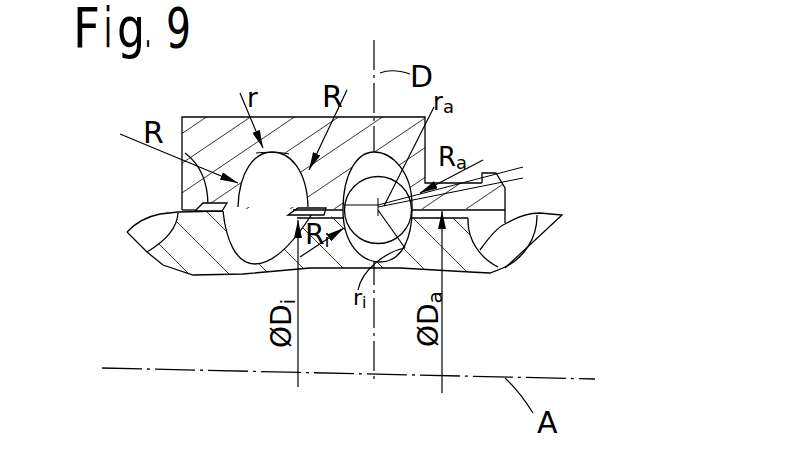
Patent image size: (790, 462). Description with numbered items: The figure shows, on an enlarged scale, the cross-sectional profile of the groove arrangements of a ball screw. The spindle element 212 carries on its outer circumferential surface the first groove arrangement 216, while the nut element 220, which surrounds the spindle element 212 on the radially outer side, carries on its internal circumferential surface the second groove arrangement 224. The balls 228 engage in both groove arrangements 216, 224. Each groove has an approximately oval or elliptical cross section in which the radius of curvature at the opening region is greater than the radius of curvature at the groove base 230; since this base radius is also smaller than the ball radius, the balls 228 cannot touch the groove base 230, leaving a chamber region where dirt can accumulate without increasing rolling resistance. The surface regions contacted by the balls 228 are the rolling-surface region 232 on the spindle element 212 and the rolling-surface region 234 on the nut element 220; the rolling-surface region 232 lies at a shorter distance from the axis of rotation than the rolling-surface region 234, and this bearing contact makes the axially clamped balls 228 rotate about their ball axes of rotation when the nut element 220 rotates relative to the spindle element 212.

The spindle element 212 is at (170, 265).
The first groove arrangement 216 is at (232, 273).
The nut element 220 is at (182, 130).
The second groove arrangement 224 is at (250, 148).
The balls 228 is at (503, 268).
The groove base 230 is at (280, 151).
The rolling-surface region 232 is at (330, 230).
The rolling-surface region 234 is at (497, 178).